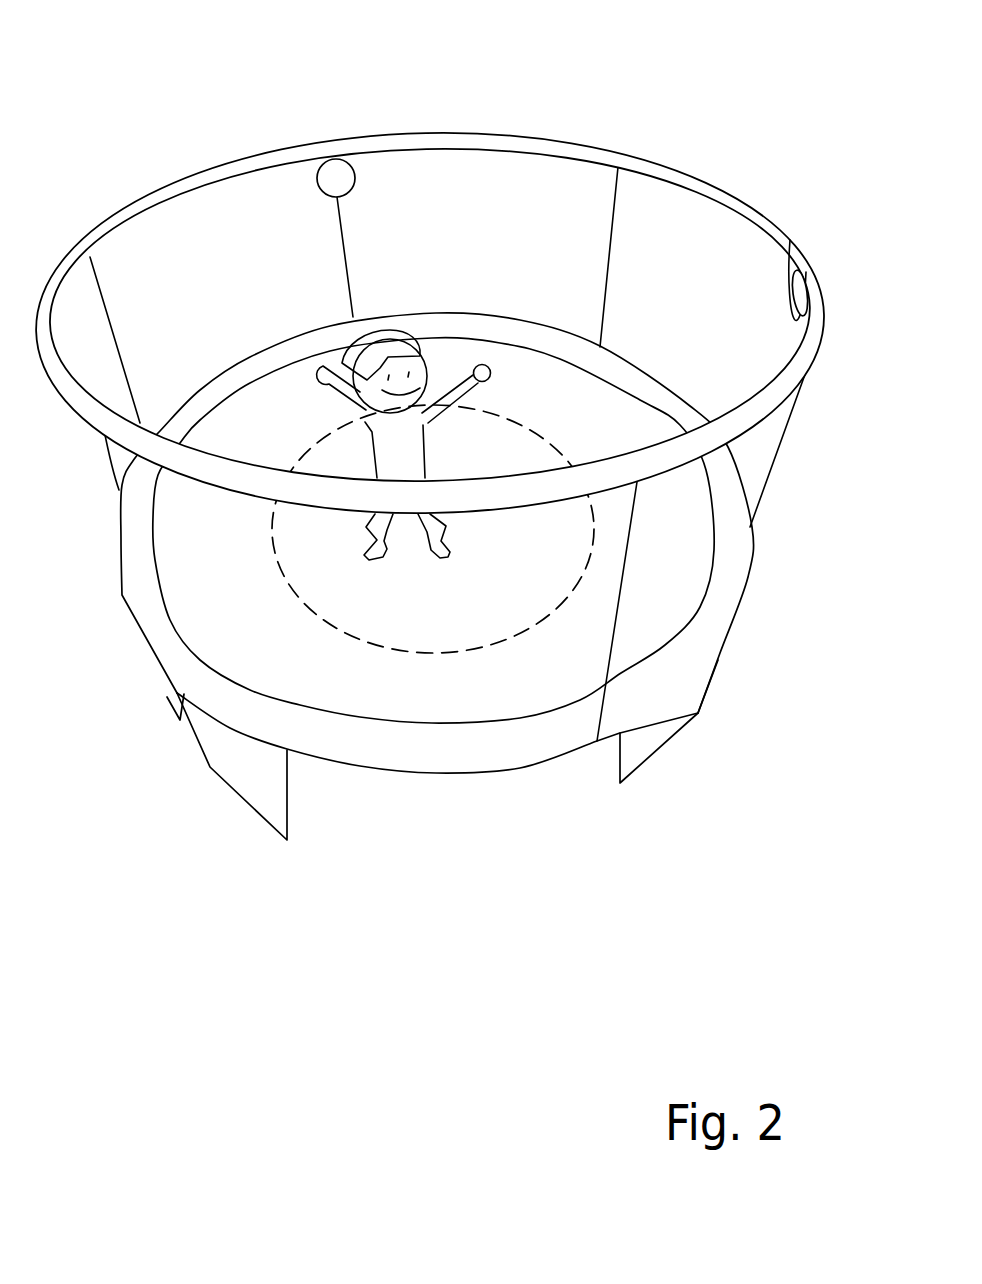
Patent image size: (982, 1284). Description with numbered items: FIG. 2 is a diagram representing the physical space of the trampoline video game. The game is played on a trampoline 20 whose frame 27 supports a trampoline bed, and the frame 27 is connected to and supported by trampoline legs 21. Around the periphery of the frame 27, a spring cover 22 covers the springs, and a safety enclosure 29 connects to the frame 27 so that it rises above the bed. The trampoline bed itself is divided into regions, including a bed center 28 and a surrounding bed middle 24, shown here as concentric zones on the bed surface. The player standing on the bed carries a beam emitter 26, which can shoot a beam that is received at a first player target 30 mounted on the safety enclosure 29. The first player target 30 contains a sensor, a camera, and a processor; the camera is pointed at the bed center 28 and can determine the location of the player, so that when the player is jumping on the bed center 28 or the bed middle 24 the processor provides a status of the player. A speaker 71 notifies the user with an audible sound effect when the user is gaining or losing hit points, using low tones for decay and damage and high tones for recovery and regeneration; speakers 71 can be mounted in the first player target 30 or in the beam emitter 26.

The trampoline 20 is at (539, 90).
The trampoline legs 21 is at (288, 830).
The spring cover 22 is at (182, 662).
The bed middle 24 is at (470, 543).
The beam emitter 26 is at (491, 373).
The frame 27 is at (484, 757).
The bed center 28 is at (363, 590).
The safety enclosure 29 is at (163, 190).
The first player target 30 is at (336, 178).
The speaker 71 is at (478, 364).